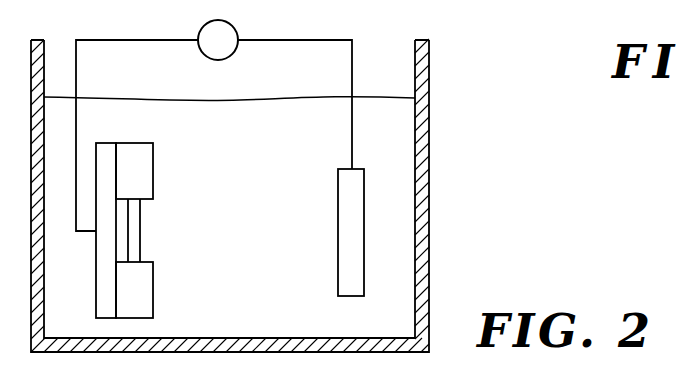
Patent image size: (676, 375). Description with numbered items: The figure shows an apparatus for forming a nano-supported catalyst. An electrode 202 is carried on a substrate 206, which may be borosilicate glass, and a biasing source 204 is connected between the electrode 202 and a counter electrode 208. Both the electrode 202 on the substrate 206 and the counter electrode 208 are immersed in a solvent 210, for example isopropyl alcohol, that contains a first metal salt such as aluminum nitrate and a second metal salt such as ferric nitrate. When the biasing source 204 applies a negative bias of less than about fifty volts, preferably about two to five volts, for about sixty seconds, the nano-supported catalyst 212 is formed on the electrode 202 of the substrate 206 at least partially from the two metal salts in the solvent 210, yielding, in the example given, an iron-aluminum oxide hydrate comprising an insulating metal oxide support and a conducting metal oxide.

The electrode 202 is at (123, 232).
The biasing source 204 is at (233, 26).
The substrate 206 is at (100, 264).
The counter electrode 208 is at (346, 199).
The solvent 210 is at (290, 104).
The nano-supported catalyst 212 is at (137, 212).